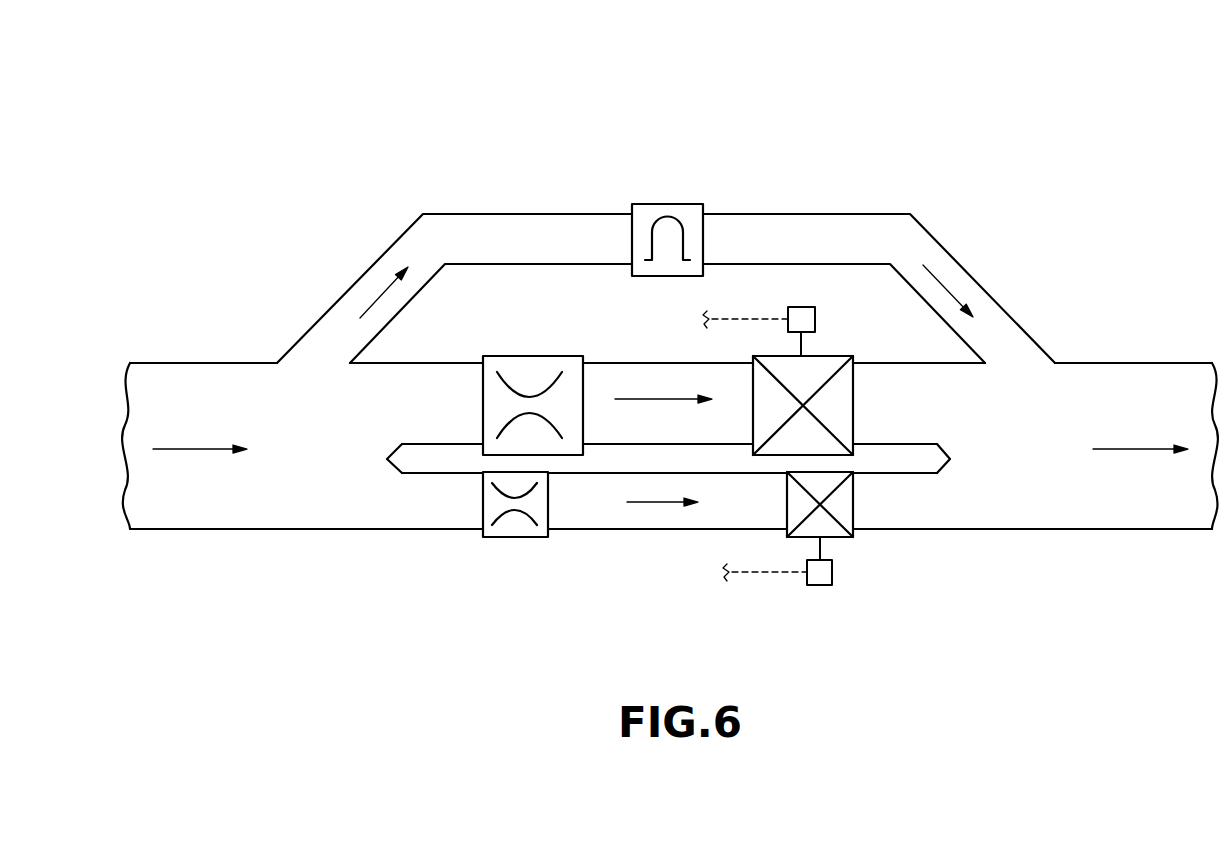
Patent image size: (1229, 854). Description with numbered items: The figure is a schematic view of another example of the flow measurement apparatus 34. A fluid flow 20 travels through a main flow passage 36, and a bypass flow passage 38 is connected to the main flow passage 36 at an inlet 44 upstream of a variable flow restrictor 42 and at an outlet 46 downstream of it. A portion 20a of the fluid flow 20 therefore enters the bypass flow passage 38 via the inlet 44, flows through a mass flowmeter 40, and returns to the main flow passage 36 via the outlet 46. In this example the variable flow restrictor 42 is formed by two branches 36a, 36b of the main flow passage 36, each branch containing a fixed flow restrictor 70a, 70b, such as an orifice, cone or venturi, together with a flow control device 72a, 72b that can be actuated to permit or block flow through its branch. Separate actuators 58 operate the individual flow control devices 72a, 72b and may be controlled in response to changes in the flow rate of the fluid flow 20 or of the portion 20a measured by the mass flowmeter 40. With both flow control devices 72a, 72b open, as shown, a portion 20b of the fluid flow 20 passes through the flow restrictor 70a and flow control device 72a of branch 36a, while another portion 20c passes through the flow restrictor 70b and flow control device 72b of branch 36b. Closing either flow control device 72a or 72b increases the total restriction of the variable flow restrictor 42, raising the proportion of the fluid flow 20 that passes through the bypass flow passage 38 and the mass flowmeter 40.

The fluid flow 20 is at (200, 449).
The portion of the fluid flow 20a is at (373, 302).
The portion of the fluid flow 20b is at (640, 399).
The portion of the fluid flow 20c is at (642, 502).
The flow measurement apparatus 34 is at (980, 132).
The main flow passage 36 is at (232, 529).
The branch of the main flow passage 36a is at (897, 363).
The branch of the main flow passage 36b is at (575, 529).
The bypass flow passage 38 is at (483, 213).
The mass flowmeter 40 is at (680, 203).
The variable flow restrictor 42 is at (545, 311).
The inlet 44 is at (316, 358).
The outlet 46 is at (1017, 358).
The actuator 58 is at (794, 307).
The fixed flow restrictor 70a is at (495, 357).
The fixed flow restrictor 70b is at (503, 537).
The flow control device 72a is at (853, 398).
The flow control device 72b is at (853, 505).